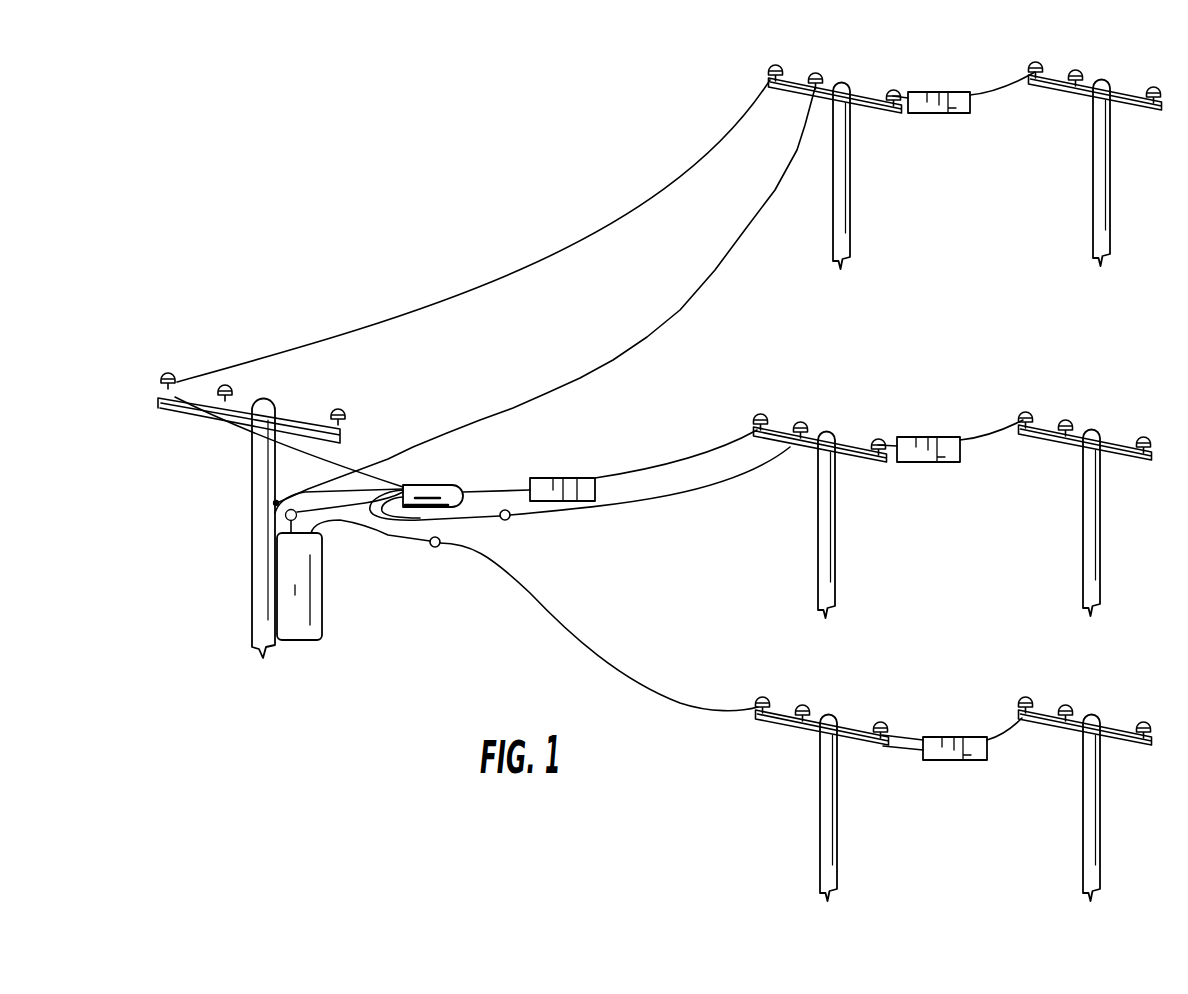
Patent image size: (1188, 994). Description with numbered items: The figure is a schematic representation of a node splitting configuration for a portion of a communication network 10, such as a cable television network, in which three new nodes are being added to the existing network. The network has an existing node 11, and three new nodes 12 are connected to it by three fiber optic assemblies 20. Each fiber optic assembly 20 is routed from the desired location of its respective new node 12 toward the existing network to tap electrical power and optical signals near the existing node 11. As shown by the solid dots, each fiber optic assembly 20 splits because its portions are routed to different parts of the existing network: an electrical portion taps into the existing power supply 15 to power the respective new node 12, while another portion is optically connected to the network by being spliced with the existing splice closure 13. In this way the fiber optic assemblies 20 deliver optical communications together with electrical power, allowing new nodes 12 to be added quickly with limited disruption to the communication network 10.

The communication network 10 is at (533, 198).
The existing node 11 is at (572, 478).
The new node 12 is at (922, 92).
The splice closure 13 is at (440, 488).
The power supply 15 is at (300, 635).
The fiber optic assembly 20 is at (872, 112).